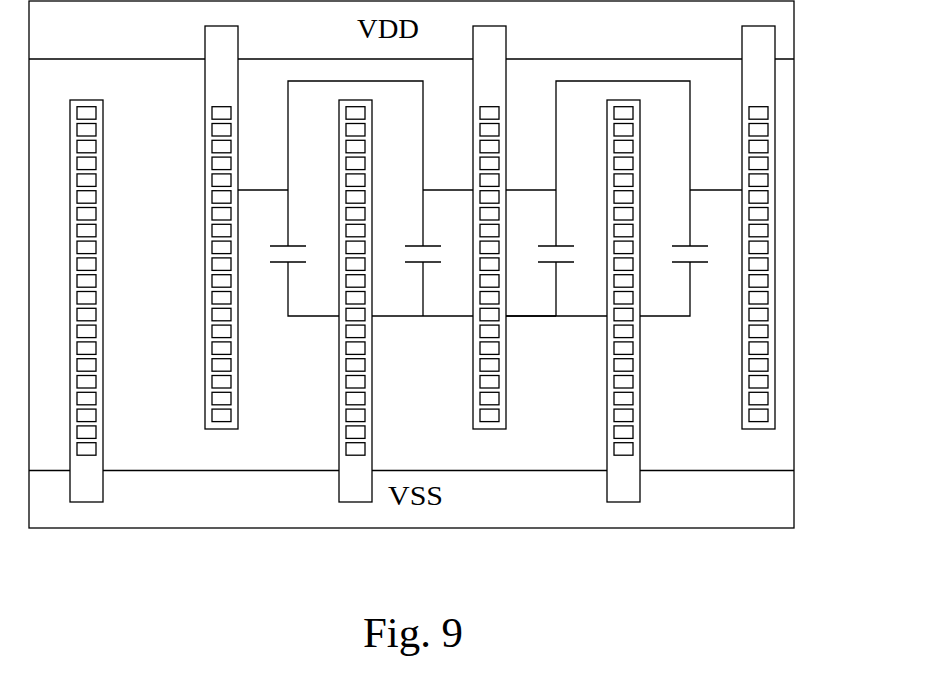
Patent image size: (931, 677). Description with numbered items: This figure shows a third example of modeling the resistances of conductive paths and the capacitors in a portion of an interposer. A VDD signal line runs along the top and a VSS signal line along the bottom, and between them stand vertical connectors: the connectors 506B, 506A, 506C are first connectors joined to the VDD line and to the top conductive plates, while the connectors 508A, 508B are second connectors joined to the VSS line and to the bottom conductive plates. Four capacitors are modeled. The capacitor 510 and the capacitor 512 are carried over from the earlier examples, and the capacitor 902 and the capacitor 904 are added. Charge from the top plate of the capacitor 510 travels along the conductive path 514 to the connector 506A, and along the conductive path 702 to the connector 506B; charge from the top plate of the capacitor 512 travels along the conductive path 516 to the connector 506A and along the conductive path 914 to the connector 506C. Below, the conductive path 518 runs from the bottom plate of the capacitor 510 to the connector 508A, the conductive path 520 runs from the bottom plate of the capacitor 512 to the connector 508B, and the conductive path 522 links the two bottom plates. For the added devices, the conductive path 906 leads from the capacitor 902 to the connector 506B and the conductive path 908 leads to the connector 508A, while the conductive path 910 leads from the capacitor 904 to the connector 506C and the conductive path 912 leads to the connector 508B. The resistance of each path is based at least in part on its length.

The connector 506A is at (506, 416).
The connector 506B is at (205, 87).
The connector 506C is at (775, 416).
The connector 508A is at (371, 416).
The connector 508B is at (640, 416).
The conductive path 702 is at (378, 153).
The conductive path 914 is at (648, 153).
The conductive path 906 is at (286, 173).
The conductive path 514 is at (448, 173).
The conductive path 516 is at (531, 173).
The conductive path 910 is at (716, 173).
The conductive path 908 is at (313, 307).
The conductive path 518 is at (422, 307).
The conductive path 520 is at (556, 306).
The conductive path 912 is at (665, 306).
The conductive path 522 is at (527, 317).
The capacitor 902 is at (295, 246).
The capacitor 510 is at (413, 246).
The capacitor 512 is at (563, 246).
The capacitor 904 is at (685, 246).